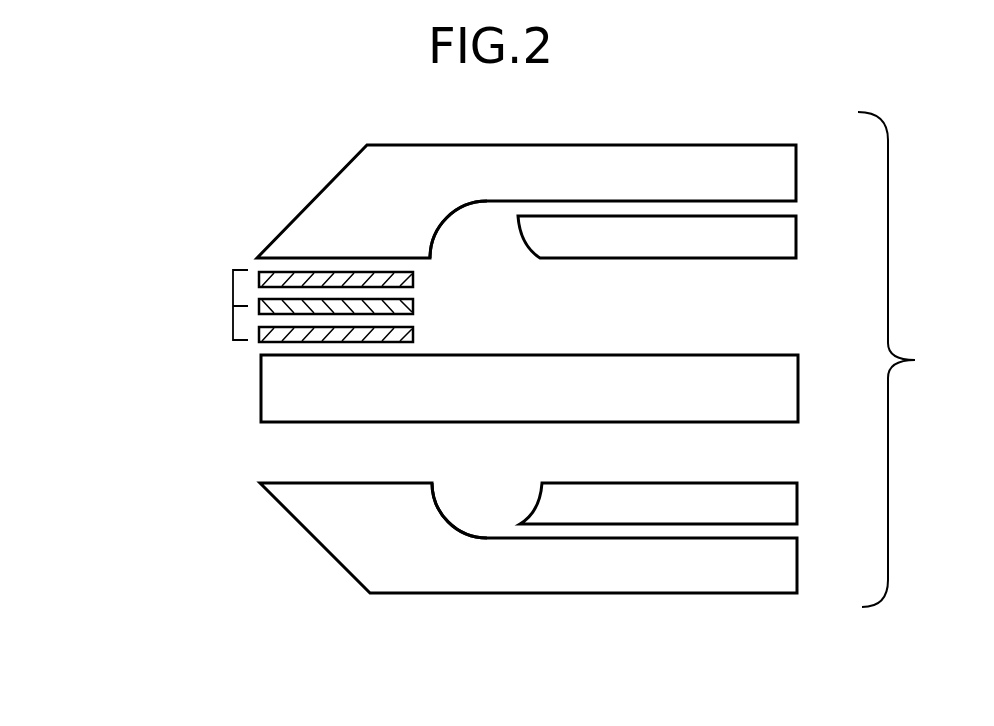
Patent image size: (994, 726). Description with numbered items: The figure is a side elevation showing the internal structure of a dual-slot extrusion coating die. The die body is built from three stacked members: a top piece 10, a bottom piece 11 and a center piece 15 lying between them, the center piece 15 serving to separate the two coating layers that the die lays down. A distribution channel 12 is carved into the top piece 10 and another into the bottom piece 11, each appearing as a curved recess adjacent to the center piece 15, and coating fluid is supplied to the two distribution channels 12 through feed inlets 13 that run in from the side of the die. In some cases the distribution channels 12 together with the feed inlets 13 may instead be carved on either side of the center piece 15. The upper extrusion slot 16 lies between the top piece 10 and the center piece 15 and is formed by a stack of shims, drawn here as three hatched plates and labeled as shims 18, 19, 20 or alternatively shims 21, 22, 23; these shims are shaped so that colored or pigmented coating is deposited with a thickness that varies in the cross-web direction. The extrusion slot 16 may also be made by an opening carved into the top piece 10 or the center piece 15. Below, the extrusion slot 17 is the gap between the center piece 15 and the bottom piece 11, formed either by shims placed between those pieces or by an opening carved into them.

The top piece 10 is at (752, 173).
The bottom piece 11 is at (745, 570).
The distribution channel 12 is at (438, 225).
The feed inlet 13 is at (790, 210).
The center piece 15 is at (735, 393).
The extrusion slot 16 is at (228, 310).
The extrusion slot 17 is at (283, 452).
The shim 18 is at (336, 279).
The shim 19 is at (336, 306).
The shim 20 is at (336, 334).
The shim 21 is at (336, 279).
The shim 22 is at (336, 306).
The shim 23 is at (336, 334).